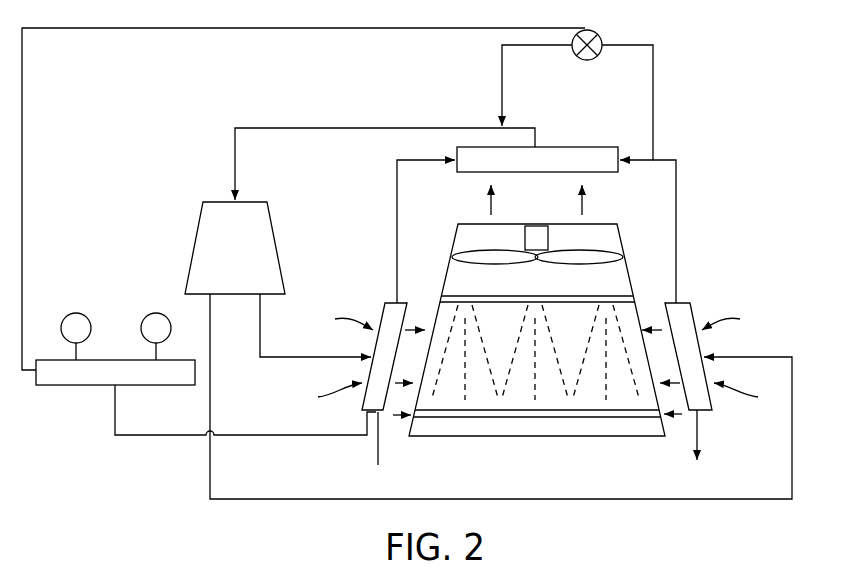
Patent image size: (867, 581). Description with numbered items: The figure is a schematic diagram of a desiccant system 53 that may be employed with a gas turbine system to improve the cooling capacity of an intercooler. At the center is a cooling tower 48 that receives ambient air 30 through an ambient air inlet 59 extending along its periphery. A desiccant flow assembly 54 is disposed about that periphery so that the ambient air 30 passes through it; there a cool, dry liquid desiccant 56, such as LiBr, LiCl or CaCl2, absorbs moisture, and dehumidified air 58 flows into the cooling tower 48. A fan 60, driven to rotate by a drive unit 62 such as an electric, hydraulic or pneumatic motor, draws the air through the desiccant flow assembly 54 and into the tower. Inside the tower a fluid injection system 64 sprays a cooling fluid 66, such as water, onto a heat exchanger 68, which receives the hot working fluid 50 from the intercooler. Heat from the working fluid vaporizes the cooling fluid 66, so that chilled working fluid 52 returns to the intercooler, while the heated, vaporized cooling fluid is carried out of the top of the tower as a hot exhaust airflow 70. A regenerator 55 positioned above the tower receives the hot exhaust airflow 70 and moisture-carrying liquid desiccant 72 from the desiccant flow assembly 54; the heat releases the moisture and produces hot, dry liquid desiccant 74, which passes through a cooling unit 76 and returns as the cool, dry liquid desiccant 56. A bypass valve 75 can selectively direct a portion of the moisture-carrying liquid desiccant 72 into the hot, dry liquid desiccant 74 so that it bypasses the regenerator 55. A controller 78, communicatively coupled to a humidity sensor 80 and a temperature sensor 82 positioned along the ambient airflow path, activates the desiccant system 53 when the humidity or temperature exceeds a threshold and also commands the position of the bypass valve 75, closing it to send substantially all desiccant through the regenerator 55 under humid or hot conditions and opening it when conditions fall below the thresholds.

The ambient air 30 is at (537, 358).
The cooling tower 48 is at (612, 224).
The hot working fluid 50 is at (377, 444).
The chilled working fluid 52 is at (700, 440).
The desiccant system 53 is at (745, 237).
The desiccant flow assembly 54 is at (392, 312).
The regenerator 55 is at (579, 147).
The liquid desiccant 56 is at (294, 357).
The dehumidified air 58 is at (415, 328).
The ambient air inlet 59 is at (430, 360).
The fan 60 is at (496, 251).
The drive unit 62 is at (549, 232).
The fluid injection system 64 is at (516, 296).
The cooling fluid 66 is at (494, 368).
The heat exchanger 68 is at (545, 418).
The hot exhaust airflow 70 is at (489, 200).
The moisture-carrying liquid desiccant 72 is at (397, 236).
The hot, dry liquid desiccant 74 is at (387, 128).
The bypass valve 75 is at (594, 31).
The cooling unit 76 is at (196, 247).
The controller 78 is at (75, 386).
The humidity sensor 80 is at (66, 317).
The temperature sensor 82 is at (146, 317).